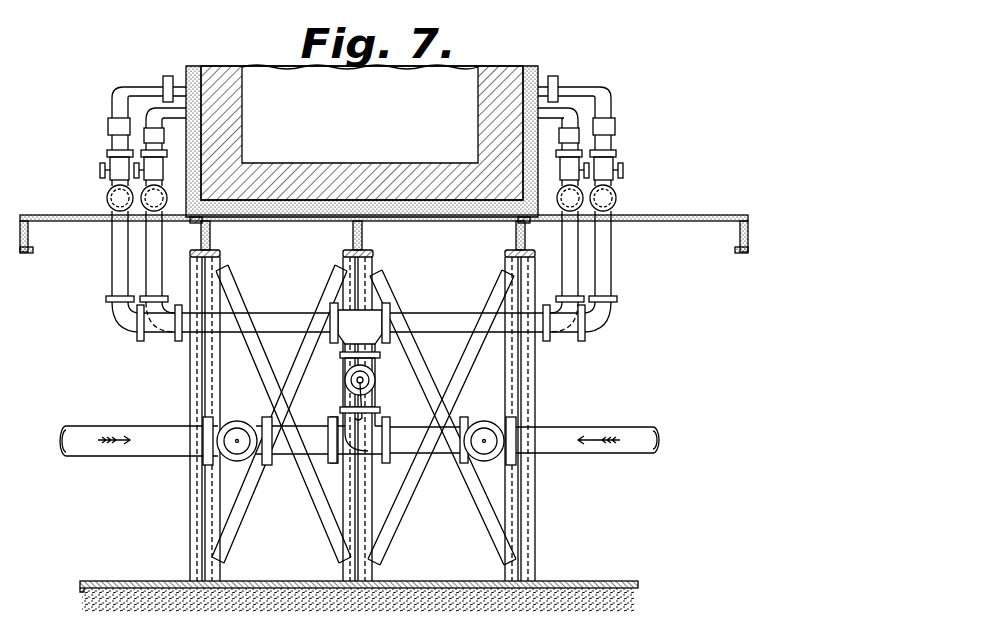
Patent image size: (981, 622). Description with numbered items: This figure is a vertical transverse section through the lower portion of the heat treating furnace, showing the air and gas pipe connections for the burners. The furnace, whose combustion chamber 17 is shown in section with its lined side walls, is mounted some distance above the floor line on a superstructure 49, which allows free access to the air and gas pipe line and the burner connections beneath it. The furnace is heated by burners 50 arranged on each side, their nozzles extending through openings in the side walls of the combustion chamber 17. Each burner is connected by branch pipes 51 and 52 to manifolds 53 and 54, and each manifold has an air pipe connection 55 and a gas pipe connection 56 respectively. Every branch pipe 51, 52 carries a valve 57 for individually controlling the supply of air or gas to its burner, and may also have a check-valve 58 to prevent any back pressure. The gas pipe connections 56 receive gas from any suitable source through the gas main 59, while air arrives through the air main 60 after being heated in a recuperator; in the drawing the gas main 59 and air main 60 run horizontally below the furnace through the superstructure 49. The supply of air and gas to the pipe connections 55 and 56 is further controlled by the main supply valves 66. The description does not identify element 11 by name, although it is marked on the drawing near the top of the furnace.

The liquid bath 11 is at (488, 59).
The combustion chamber 17 is at (325, 136).
The superstructure 49 is at (347, 514).
The burners 50 is at (245, 98).
The branch pipe 51 is at (112, 106).
The branch pipe 52 is at (157, 110).
The manifold 53 is at (105, 198).
The manifold 54 is at (127, 222).
The air pipe connection 55 is at (118, 252).
The gas pipe connection 56 is at (147, 268).
The valve 57 is at (133, 170).
The check-valve 58 is at (144, 136).
The gas main 59 is at (628, 453).
The air main 60 is at (143, 449).
The main supply valve 66 is at (350, 380).